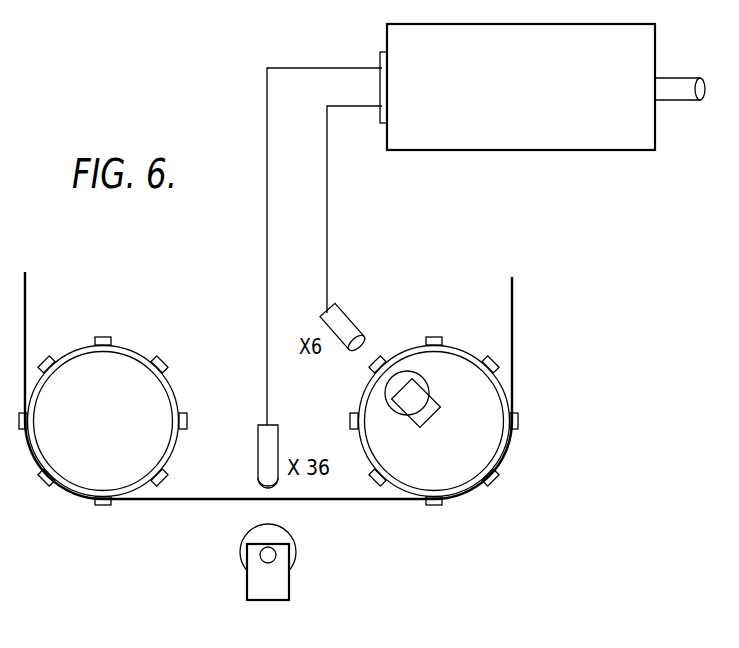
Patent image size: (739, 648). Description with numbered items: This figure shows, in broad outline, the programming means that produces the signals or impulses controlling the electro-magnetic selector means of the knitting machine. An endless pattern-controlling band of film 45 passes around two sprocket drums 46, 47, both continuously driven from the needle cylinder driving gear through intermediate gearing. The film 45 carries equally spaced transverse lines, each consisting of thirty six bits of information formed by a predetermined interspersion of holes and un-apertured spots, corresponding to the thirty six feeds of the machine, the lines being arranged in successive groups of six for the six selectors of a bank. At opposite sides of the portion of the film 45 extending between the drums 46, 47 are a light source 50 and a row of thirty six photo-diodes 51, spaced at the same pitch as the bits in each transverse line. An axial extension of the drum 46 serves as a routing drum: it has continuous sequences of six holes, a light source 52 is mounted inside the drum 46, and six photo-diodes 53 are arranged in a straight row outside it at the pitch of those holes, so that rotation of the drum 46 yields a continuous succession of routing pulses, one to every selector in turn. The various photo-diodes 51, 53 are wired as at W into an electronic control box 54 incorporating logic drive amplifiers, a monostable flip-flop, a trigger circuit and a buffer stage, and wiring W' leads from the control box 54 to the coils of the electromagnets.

The pattern-controlling band of film 45 is at (27, 326).
The sprocket drum 46 is at (483, 449).
The sprocket drum 47 is at (125, 373).
The light source 50 is at (292, 572).
The photo-diodes 51 is at (262, 443).
The light source 52 is at (422, 377).
The photo-diodes 53 is at (345, 323).
The electronic control box 54 is at (530, 145).
The wiring W is at (327, 233).
The wiring W' is at (680, 112).